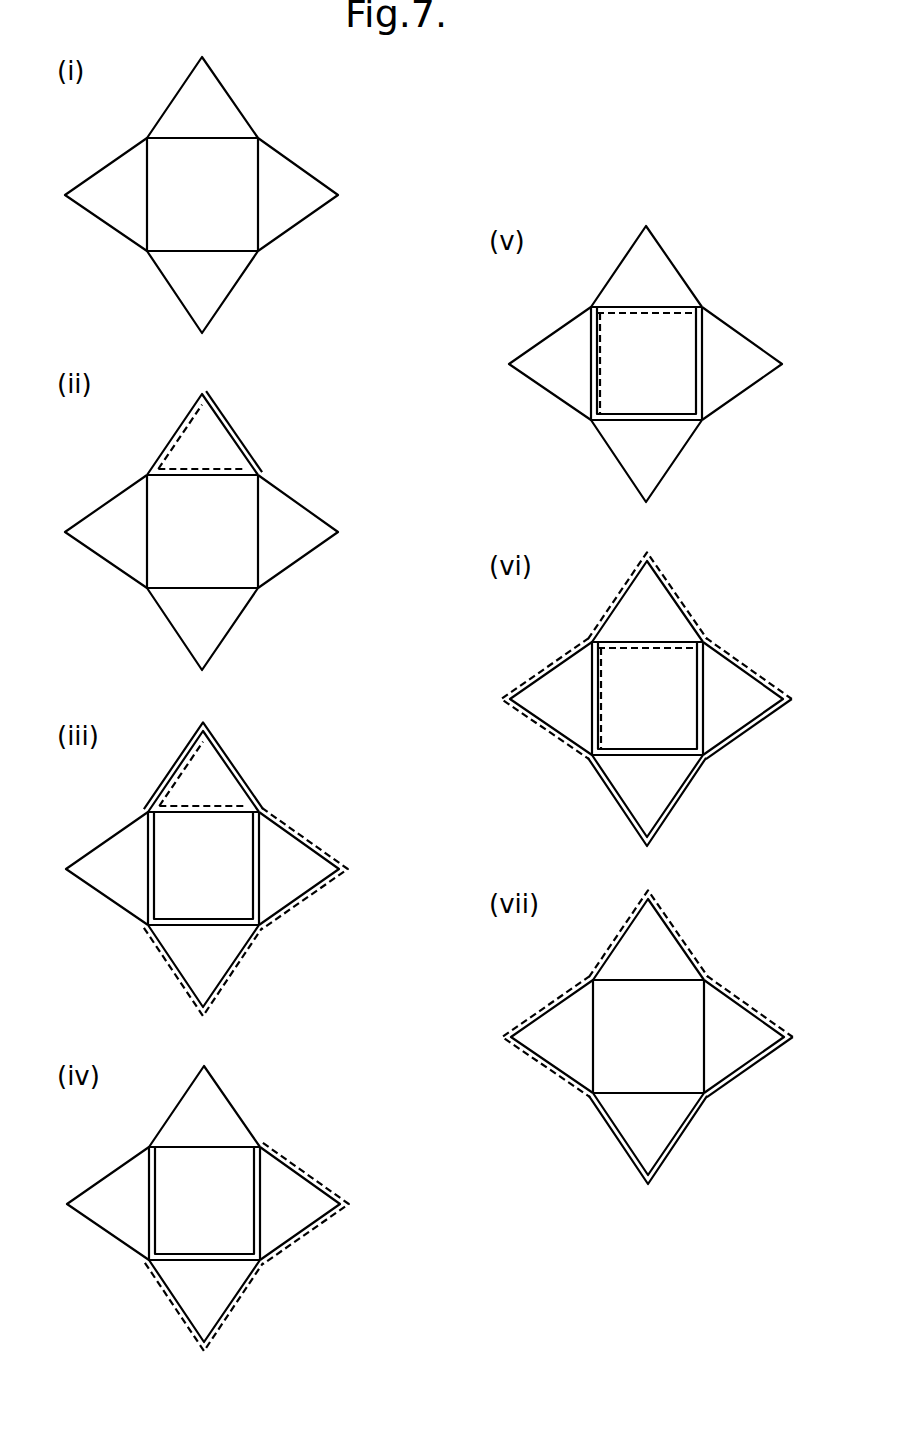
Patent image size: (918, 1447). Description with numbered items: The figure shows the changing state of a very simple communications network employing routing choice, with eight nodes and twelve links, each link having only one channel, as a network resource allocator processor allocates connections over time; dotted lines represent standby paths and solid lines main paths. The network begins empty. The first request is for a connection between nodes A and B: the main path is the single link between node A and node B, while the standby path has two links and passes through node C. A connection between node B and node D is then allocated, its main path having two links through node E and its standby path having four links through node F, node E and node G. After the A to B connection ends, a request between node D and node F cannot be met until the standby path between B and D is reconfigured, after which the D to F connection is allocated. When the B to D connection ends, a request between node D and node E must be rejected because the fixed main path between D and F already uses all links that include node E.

The node A is at (204, 419).
The node B is at (475, 770).
The node C is at (156, 531).
The node D is at (370, 783).
The node E is at (426, 1024).
The node F is at (526, 785).
The node G is at (203, 970).